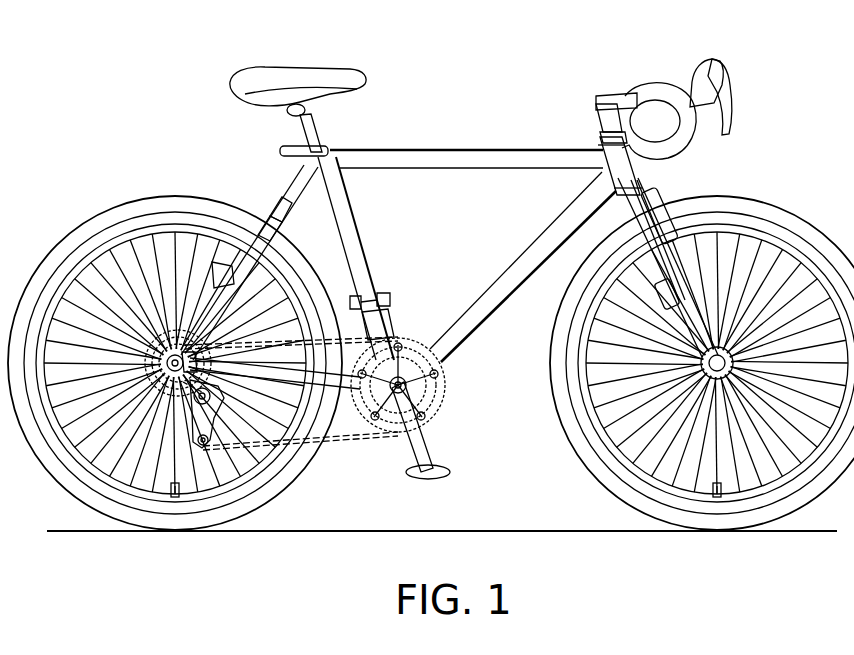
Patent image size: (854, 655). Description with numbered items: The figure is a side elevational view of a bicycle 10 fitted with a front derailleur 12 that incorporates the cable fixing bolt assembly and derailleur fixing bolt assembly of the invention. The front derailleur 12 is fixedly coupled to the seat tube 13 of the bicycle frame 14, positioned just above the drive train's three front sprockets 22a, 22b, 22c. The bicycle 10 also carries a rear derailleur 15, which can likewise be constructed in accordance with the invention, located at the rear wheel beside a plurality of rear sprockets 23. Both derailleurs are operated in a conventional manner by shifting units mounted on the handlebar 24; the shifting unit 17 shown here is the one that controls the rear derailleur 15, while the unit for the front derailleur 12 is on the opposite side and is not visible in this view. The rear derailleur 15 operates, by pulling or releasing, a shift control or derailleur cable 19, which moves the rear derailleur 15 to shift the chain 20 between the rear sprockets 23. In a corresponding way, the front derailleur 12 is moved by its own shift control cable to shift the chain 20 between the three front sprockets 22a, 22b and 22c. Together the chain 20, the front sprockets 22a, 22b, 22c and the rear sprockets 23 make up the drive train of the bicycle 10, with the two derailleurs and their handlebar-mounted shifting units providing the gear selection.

The bicycle 10 is at (412, 110).
The front derailleur 12 is at (398, 315).
The seat tube 13 is at (360, 247).
The bicycle frame 14 is at (470, 142).
The rear derailleur 15 is at (228, 430).
The shifting unit 17 is at (745, 83).
The derailleur cable 19 is at (365, 440).
The chain 20 is at (343, 446).
The front sprocket 22a is at (447, 373).
The front sprocket 22b is at (447, 385).
The front sprocket 22c is at (449, 397).
The rear sprockets 23 is at (183, 328).
The handlebar 24 is at (661, 84).